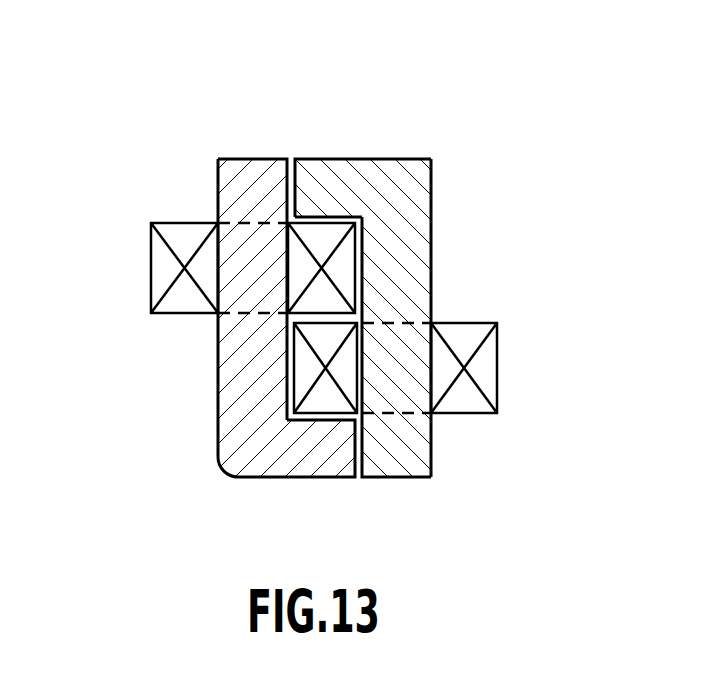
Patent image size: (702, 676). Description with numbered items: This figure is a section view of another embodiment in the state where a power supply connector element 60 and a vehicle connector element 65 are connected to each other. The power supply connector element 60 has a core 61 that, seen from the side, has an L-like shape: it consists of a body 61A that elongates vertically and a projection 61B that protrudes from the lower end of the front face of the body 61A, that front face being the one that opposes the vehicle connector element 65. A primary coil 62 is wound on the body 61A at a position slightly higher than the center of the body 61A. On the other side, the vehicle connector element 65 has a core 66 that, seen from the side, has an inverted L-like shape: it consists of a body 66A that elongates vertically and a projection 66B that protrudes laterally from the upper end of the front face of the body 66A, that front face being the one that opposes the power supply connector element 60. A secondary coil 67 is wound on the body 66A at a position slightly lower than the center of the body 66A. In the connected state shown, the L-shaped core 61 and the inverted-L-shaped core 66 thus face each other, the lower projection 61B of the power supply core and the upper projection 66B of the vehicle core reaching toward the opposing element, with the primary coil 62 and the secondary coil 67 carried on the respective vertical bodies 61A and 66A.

The power supply connector element 60 is at (306, 123).
The core 61 is at (220, 158).
The body 61A is at (228, 412).
The projection 61B is at (292, 467).
The primary coil 62 is at (153, 263).
The vehicle connector element 65 is at (442, 136).
The core 66 is at (432, 160).
The body 66A is at (423, 255).
The projection 66B is at (355, 165).
The secondary coil 67 is at (486, 365).